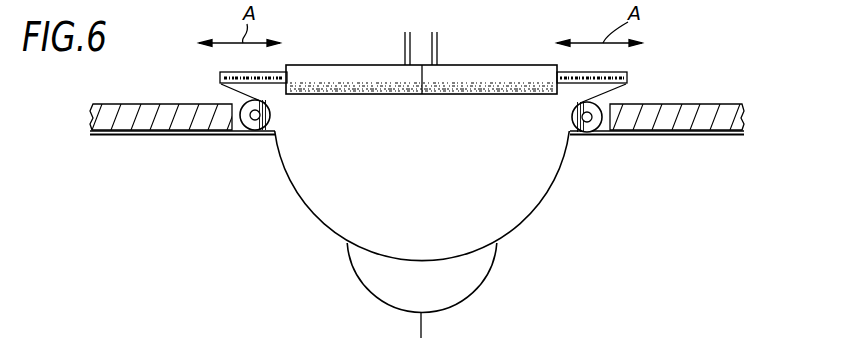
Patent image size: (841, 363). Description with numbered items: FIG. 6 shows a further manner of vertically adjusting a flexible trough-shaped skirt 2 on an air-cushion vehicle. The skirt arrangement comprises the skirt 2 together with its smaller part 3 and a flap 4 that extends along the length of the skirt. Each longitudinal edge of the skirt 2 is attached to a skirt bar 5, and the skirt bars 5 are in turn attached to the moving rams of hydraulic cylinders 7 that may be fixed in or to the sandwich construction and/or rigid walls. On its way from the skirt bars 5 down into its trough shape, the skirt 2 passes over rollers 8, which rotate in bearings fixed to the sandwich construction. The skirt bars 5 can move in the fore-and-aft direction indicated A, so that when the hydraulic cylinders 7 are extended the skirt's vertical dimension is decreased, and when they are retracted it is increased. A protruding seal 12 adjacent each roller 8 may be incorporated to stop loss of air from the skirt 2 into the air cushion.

The skirt 2 is at (545, 197).
The smaller part 3 is at (495, 249).
The flap 4 is at (421, 327).
The skirt bar 5 is at (221, 74).
The hydraulic cylinder 7 is at (377, 83).
The roller 8 is at (270, 115).
The protruding seal 12 is at (258, 137).